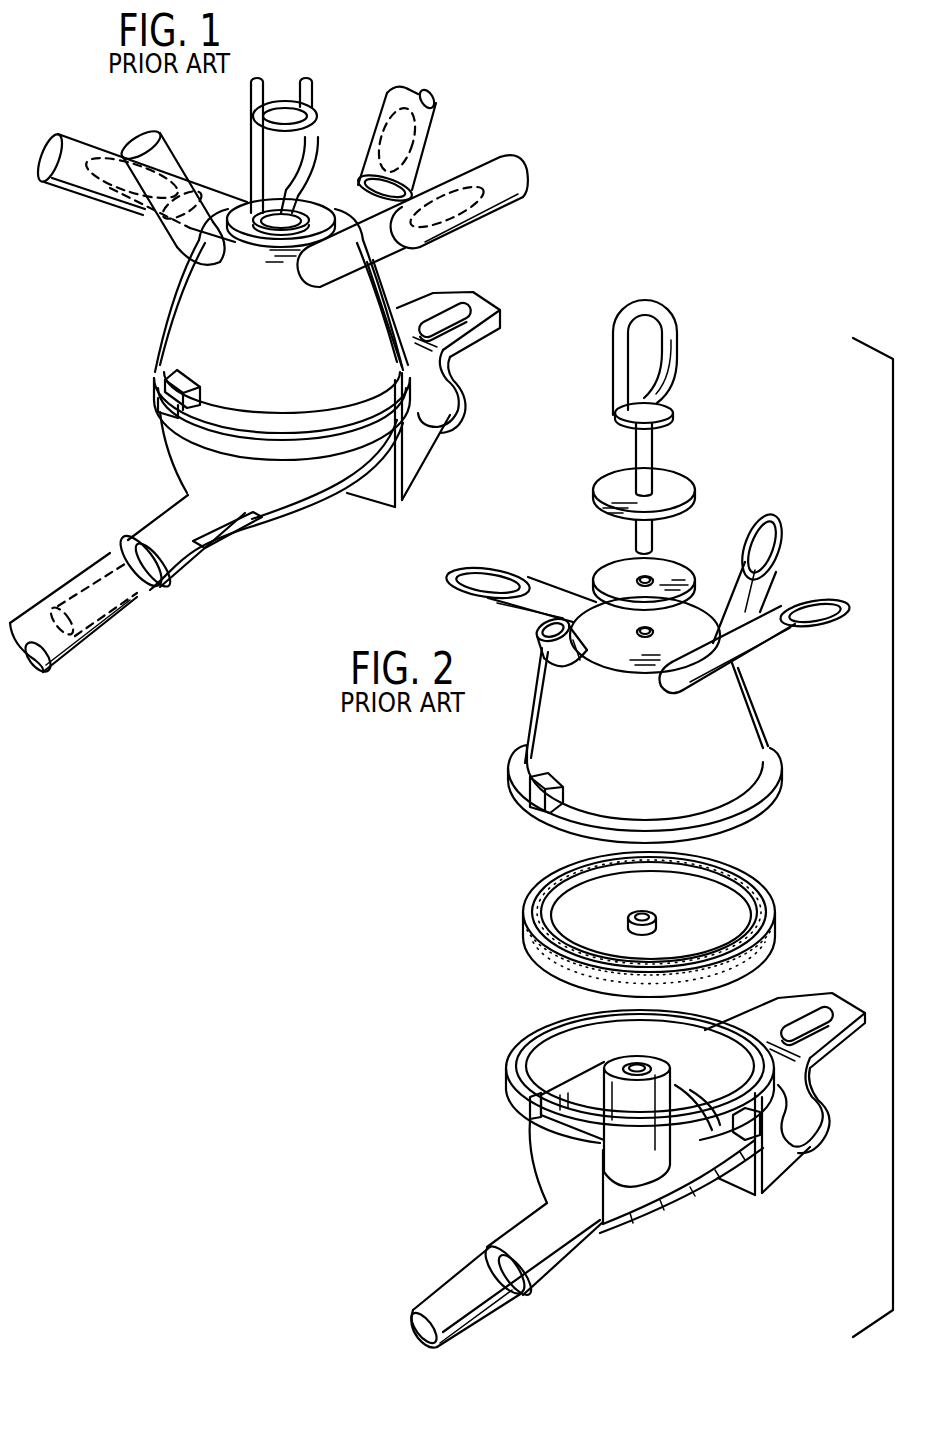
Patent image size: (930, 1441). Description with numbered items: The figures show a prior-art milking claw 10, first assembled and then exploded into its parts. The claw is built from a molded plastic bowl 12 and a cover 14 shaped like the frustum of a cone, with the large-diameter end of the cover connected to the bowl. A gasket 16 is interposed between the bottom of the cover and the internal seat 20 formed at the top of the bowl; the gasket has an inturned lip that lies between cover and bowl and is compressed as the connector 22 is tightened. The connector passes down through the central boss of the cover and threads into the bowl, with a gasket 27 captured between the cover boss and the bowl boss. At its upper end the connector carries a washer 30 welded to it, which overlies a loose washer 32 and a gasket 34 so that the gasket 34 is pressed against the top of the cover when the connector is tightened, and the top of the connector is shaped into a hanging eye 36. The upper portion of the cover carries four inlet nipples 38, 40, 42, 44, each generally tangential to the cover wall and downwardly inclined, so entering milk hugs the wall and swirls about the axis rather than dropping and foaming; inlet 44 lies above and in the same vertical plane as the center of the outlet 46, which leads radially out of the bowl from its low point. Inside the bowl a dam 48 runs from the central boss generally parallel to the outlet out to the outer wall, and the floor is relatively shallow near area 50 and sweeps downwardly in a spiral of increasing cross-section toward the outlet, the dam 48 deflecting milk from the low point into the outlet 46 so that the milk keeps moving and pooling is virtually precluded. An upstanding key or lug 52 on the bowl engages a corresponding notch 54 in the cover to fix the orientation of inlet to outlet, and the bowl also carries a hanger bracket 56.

In FIG. 1, the milking claw 10 is at (505, 112).
In FIG. 1, the bowl 12 is at (190, 457).
In FIG. 2, the bowl 12 is at (672, 1212).
In FIG. 1, the cover 14 is at (187, 310).
In FIG. 2, the cover 14 is at (550, 722).
In FIG. 2, the gasket 16 is at (522, 912).
In FIG. 2, the internal seat 20 is at (692, 1045).
In FIG. 1, the connector 22 is at (348, 100).
In FIG. 2, the connector 22 is at (608, 438).
In FIG. 2, the gasket 27 is at (656, 915).
In FIG. 1, the washer 30 is at (323, 210).
In FIG. 2, the washer 30 is at (661, 407).
In FIG. 1, the loose washer 32 is at (265, 237).
In FIG. 2, the loose washer 32 is at (676, 483).
In FIG. 2, the gasket 34 is at (615, 567).
In FIG. 1, the hanging eye 36 is at (252, 122).
In FIG. 2, the hanging eye 36 is at (622, 358).
In FIG. 1, the inlet nipple 38 is at (383, 242).
In FIG. 2, the inlet nipple 38 is at (813, 610).
In FIG. 1, the inlet nipple 40 is at (427, 130).
In FIG. 2, the inlet nipple 40 is at (763, 538).
In FIG. 1, the inlet nipple 42 is at (122, 214).
In FIG. 2, the inlet nipple 42 is at (545, 592).
In FIG. 1, the inlet nipple 44 is at (188, 265).
In FIG. 2, the inlet nipple 44 is at (563, 657).
In FIG. 1, the outlet 46 is at (163, 530).
In FIG. 2, the outlet 46 is at (525, 1232).
In FIG. 2, the dam 48 is at (575, 1075).
In FIG. 2, the area 50 is at (550, 1072).
In FIG. 1, the key or lug 52 is at (170, 425).
In FIG. 2, the key or lug 52 is at (530, 1112).
In FIG. 1, the notch 54 is at (167, 398).
In FIG. 2, the notch 54 is at (543, 812).
In FIG. 1, the hanger bracket 56 is at (493, 292).
In FIG. 2, the hanger bracket 56 is at (823, 1003).